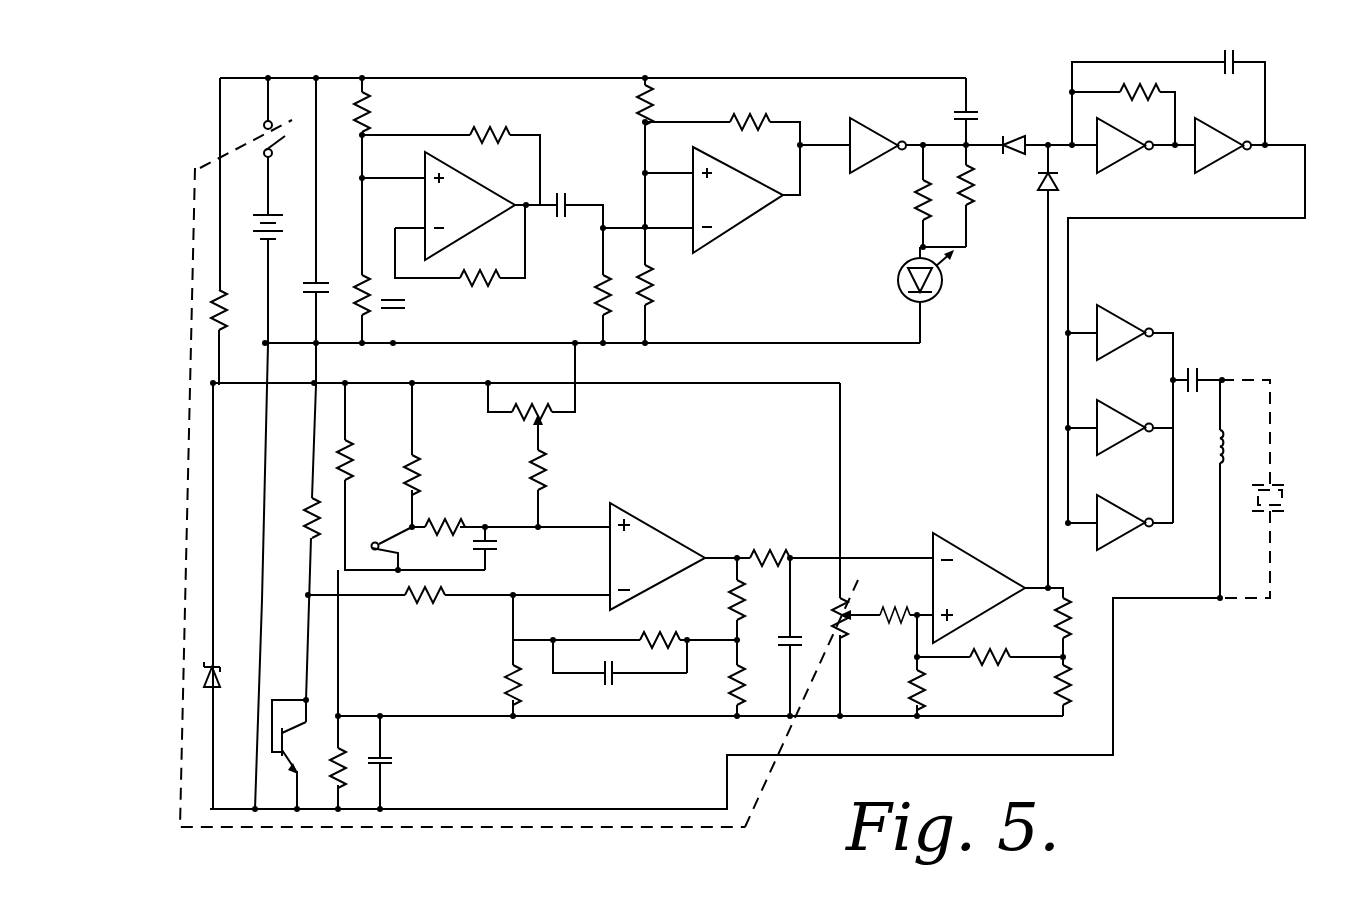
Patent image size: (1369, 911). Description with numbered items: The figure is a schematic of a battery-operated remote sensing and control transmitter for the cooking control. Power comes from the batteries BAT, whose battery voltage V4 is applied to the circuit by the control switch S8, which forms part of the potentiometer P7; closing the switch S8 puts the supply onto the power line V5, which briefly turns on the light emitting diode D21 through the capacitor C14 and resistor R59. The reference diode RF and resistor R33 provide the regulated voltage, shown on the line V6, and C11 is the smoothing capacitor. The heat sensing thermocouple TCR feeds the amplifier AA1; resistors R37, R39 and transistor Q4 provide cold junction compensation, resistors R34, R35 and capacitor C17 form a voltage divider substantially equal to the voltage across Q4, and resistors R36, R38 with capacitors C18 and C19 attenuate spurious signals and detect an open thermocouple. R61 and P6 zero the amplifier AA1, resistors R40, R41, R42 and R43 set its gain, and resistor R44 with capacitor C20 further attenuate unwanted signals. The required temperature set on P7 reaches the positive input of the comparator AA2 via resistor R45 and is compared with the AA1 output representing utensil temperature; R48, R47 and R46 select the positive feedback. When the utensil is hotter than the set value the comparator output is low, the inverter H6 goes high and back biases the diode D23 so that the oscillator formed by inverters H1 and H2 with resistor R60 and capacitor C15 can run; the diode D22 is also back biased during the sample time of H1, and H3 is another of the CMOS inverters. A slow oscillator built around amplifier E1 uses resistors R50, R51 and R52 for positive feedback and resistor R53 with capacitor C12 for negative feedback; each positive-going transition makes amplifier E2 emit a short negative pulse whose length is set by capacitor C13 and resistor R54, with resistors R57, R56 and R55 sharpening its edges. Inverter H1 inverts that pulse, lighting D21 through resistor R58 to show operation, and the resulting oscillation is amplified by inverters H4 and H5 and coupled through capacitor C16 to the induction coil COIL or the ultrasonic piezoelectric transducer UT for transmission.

The power line V5 is at (322, 70).
The control switch S8 is at (287, 148).
The battery voltage V4 is at (276, 190).
The batteries BAT is at (280, 234).
The resistor R33 is at (222, 318).
The smoothing capacitor C11 is at (328, 290).
The reference diode RF is at (216, 664).
The resistor R50 is at (368, 126).
The resistor R51 is at (364, 268).
The resistor R52 is at (498, 118).
The resistor R53 is at (495, 268).
The amplifier E1 is at (470, 206).
The capacitor C12 is at (404, 305).
The capacitor C13 is at (575, 188).
The resistor R54 is at (600, 295).
The resistor R55 is at (650, 285).
The resistor R56 is at (642, 112).
The resistor R57 is at (752, 114).
The amplifier E2 is at (738, 200).
The inverter H1 is at (872, 132).
The resistor R58 is at (920, 204).
The capacitor C14 is at (972, 100).
The resistor R59 is at (972, 186).
The light emitting diode D21 is at (903, 280).
The diode D22 is at (1022, 132).
The diode D23 is at (1058, 192).
The resistor R60 is at (1162, 84).
The capacitor C15 is at (1238, 46).
The inverter H2 is at (1128, 152).
The inverter H3 is at (1222, 152).
The inverter H4 is at (1118, 318).
The inverter H5 is at (1118, 414).
The inverter H6 is at (1118, 509).
The capacitor C16 is at (1210, 360).
The induction coil COIL is at (1232, 440).
The ultra-sonic piezo-electric transducer UT is at (1276, 482).
The regulated voltage line V6 is at (364, 383).
The potentiometer P6 is at (528, 420).
The resistor R61 is at (546, 468).
The resistor R34 is at (350, 458).
The resistor R36 is at (408, 478).
The resistor R37 is at (306, 516).
The heat sensing thermocouple TCR is at (380, 541).
The resistor R38 is at (450, 525).
The capacitor C18 is at (496, 547).
The resistor R39 is at (430, 600).
The resistor R40 is at (511, 692).
The resistor R41 is at (662, 642).
The capacitor C19 is at (604, 678).
The resistor R43 is at (730, 684).
The resistor R42 is at (730, 608).
The capacitor C20 is at (776, 640).
The amplifier AA1 is at (657, 556).
The resistor R44 is at (772, 548).
The comparator AA2 is at (979, 588).
The potentiometer P7 is at (854, 629).
The resistor R45 is at (900, 600).
The resistor R46 is at (922, 688).
The resistor R47 is at (990, 644).
The resistor R48 is at (1068, 612).
The resistor R35 is at (344, 748).
The capacitor C17 is at (392, 762).
The transistor Q4 is at (279, 754).